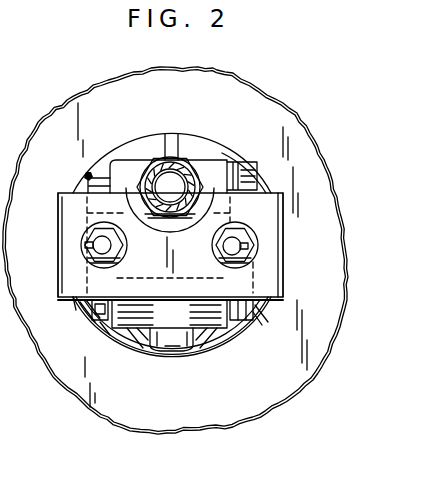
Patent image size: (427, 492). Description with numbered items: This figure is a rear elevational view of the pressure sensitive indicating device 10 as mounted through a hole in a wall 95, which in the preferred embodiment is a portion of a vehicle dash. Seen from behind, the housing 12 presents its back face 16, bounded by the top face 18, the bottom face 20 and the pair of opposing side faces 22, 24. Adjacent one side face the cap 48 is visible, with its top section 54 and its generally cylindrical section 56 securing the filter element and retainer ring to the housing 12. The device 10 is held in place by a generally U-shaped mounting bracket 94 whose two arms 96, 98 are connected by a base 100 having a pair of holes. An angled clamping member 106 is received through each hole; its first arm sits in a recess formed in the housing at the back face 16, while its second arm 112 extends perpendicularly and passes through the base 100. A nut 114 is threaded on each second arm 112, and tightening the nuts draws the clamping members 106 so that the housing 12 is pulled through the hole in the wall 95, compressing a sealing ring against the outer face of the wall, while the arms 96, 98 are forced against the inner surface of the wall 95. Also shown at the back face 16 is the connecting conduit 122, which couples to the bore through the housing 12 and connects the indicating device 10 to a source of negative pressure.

The pressure sensitive indicating device 10 is at (241, 122).
The housing 12 is at (201, 130).
The back face 16 is at (131, 158).
The top face 18 is at (128, 173).
The bottom face 20 is at (132, 348).
The side face 22 is at (82, 305).
The side face 24 is at (260, 310).
The cap 48 is at (86, 173).
The top section 54 is at (82, 186).
The cylindrical section 56 is at (95, 328).
The mounting bracket 94 is at (50, 270).
The wall 95 is at (90, 407).
The arm 96 is at (58, 223).
The arm 98 is at (277, 232).
The base 100 is at (180, 287).
The clamping member 106 is at (92, 245).
The second arm 112 is at (85, 257).
The nut 114 is at (125, 253).
The connecting conduit 122 is at (195, 168).